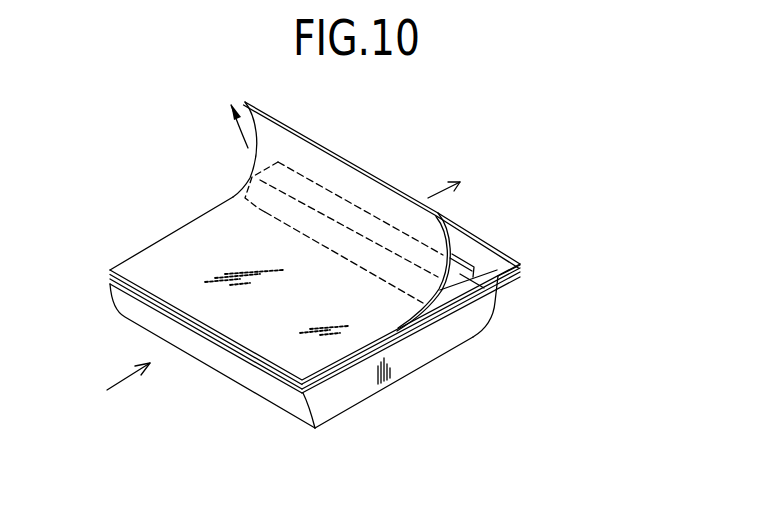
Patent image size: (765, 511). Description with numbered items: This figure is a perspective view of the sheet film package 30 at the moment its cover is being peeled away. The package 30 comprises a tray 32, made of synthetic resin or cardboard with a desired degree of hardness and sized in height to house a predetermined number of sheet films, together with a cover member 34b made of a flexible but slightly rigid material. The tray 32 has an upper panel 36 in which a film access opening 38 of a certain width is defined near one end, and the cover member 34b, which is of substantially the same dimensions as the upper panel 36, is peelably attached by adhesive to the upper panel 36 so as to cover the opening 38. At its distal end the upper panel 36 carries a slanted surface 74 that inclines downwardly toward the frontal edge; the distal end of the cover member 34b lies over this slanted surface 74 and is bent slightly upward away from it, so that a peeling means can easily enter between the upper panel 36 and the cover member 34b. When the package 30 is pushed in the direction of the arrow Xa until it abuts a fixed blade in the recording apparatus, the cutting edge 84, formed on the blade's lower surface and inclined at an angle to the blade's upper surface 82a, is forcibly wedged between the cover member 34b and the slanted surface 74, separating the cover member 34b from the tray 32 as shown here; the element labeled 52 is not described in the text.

The sheet film package 30 is at (112, 246).
The tray 32 is at (354, 398).
The cover member 34b is at (382, 320).
The upper panel 36 is at (517, 260).
The film access opening 38 is at (490, 251).
The strip 52 is at (460, 247).
The slanted surface 74 is at (462, 247).
The upper surface 82a is at (498, 301).
The cutting edge 84 is at (256, 216).